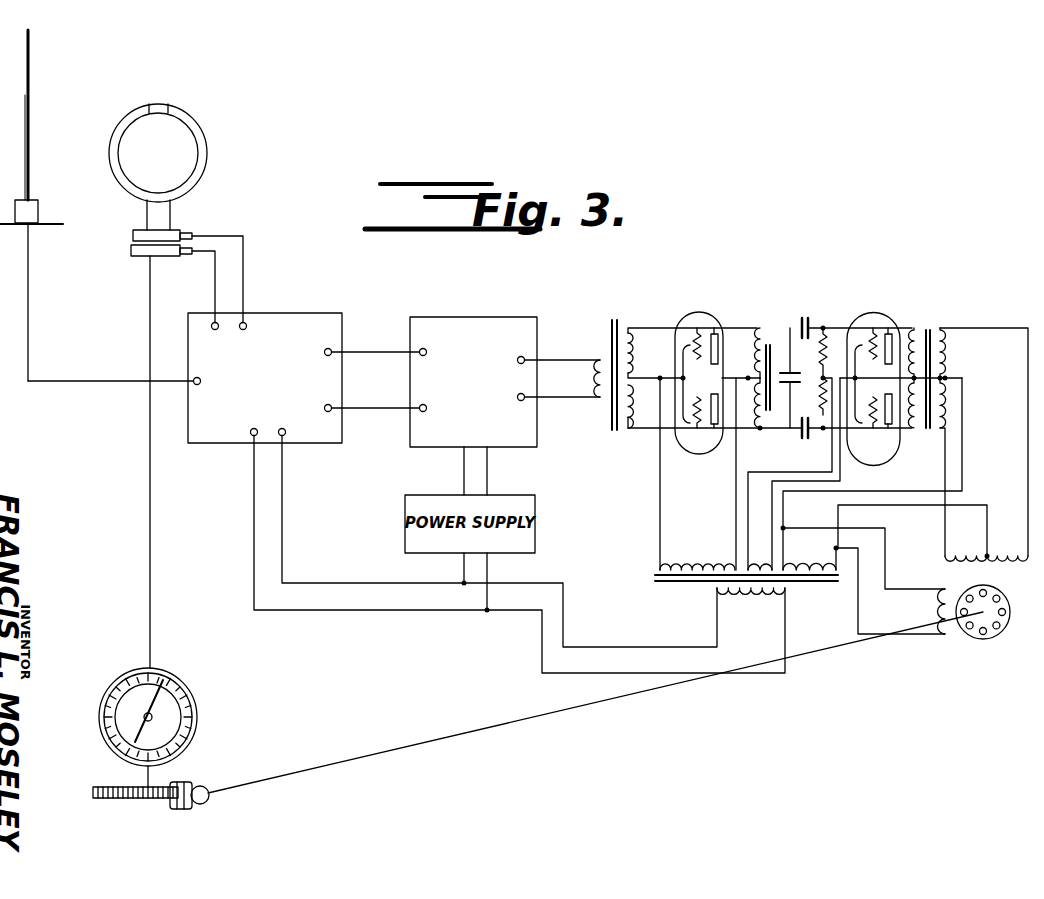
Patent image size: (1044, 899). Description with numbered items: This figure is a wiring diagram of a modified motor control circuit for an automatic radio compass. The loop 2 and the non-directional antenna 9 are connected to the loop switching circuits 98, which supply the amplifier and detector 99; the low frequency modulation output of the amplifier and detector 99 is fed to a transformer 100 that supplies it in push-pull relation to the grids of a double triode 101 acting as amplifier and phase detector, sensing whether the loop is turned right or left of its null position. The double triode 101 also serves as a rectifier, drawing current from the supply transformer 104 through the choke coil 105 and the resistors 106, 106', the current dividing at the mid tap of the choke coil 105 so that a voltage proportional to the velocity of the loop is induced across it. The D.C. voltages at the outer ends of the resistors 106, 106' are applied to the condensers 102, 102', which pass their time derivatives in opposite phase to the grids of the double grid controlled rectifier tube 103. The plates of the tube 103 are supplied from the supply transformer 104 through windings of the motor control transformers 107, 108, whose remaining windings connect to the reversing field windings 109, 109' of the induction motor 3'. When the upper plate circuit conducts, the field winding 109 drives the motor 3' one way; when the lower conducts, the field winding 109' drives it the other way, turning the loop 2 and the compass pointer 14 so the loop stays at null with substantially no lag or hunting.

The non-directional antenna 9 is at (32, 128).
The loop 2 is at (199, 129).
The loop switching circuits 98 is at (283, 311).
The amplifier and detector 99 is at (468, 309).
The transformer 100 is at (663, 361).
The double triode 101 is at (700, 305).
The choke coil 105 is at (703, 384).
The resistor 106 is at (757, 351).
The resistor 106' is at (761, 421).
The condenser 102 is at (807, 315).
The condenser 102' is at (816, 446).
The double grid controlled rectifier tube 103 is at (879, 312).
The motor control transformer 107 is at (933, 365).
The motor control transformer 108 is at (927, 421).
The supply transformer 104 is at (726, 486).
The reversing field winding 109 is at (1007, 548).
The reversing field winding 109' is at (967, 547).
The induction motor 3' is at (974, 623).
The radio compass pointer 14 is at (148, 727).